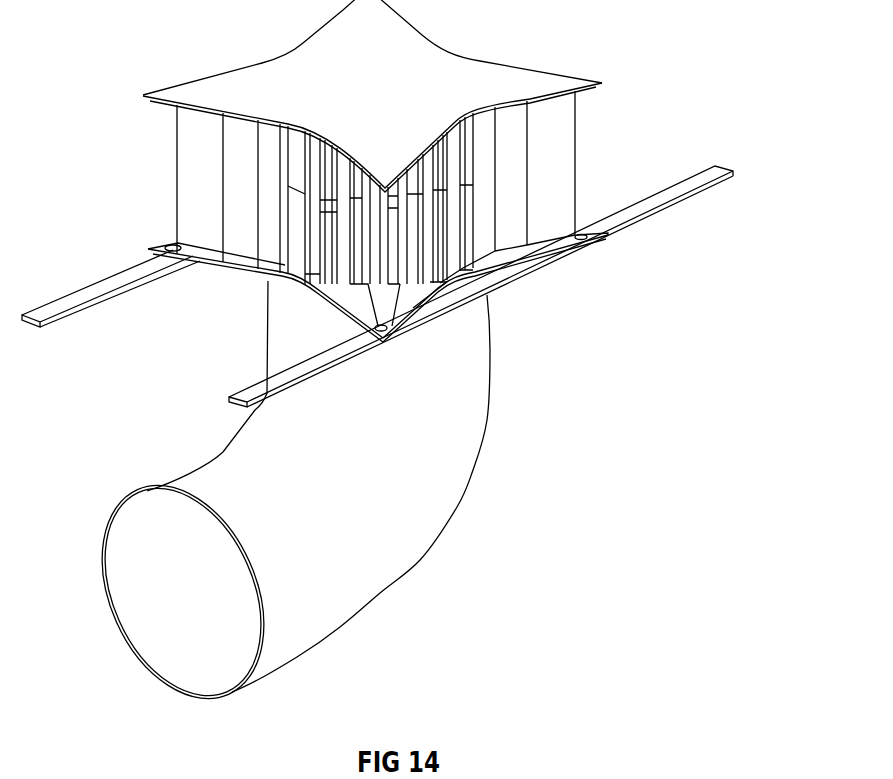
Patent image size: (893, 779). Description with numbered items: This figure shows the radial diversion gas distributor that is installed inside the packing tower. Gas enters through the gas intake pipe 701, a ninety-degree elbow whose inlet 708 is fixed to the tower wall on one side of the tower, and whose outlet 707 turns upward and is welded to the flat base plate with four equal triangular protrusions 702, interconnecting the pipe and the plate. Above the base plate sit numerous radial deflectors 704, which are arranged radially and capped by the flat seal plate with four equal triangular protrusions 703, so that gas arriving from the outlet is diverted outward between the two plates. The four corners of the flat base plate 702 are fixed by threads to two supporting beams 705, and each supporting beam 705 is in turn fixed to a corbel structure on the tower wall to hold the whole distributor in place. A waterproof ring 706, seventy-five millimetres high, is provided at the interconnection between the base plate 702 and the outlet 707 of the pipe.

The gas intake pipe 701 is at (423, 448).
The flat base plate with four equal triangular protrusions 702 is at (397, 337).
The flat seal plate with four equal triangular protrusions 703 is at (487, 77).
The radial deflectors 704 is at (553, 223).
The supporting beam 705 is at (640, 210).
The waterproof ring 706 is at (463, 272).
The outlet of the gas intake pipe 707 is at (302, 257).
The inlet of the gas intake pipe 708 is at (240, 643).